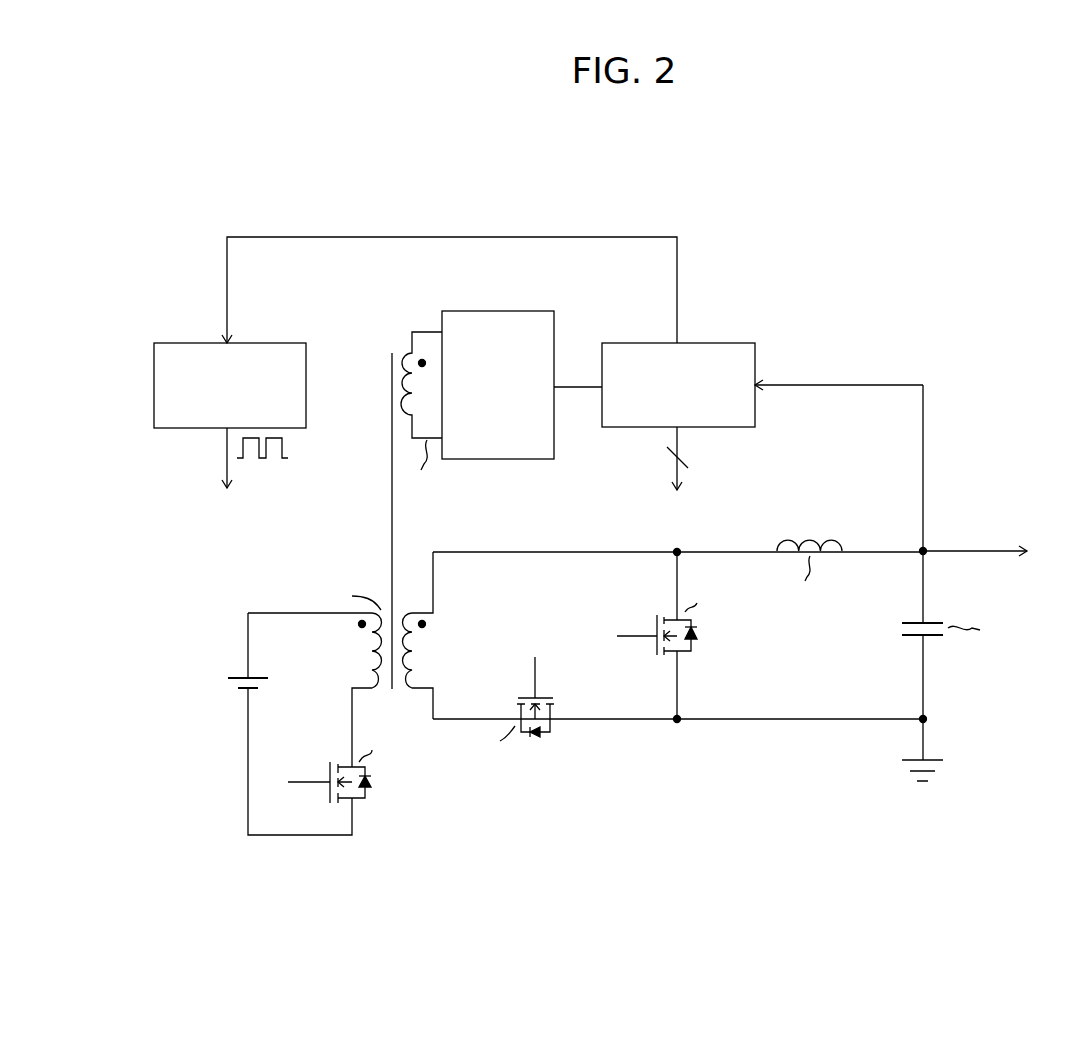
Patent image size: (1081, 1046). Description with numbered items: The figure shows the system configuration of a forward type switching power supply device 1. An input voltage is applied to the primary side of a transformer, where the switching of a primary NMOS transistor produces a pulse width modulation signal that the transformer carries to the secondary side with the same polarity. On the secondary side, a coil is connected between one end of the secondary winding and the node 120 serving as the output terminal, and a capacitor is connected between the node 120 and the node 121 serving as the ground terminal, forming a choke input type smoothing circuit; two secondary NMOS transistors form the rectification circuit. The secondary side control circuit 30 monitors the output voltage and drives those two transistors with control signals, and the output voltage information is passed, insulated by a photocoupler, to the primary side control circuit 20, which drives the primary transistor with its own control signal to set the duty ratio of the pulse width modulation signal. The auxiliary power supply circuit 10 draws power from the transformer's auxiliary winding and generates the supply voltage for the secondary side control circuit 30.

The switching power supply device 1 is at (590, 817).
The auxiliary power supply circuit 10 is at (492, 310).
The primary side control circuit 20 is at (267, 341).
The secondary side control circuit 30 is at (716, 342).
The node (output terminal) 120 is at (928, 557).
The node (ground terminal) 121 is at (928, 718).